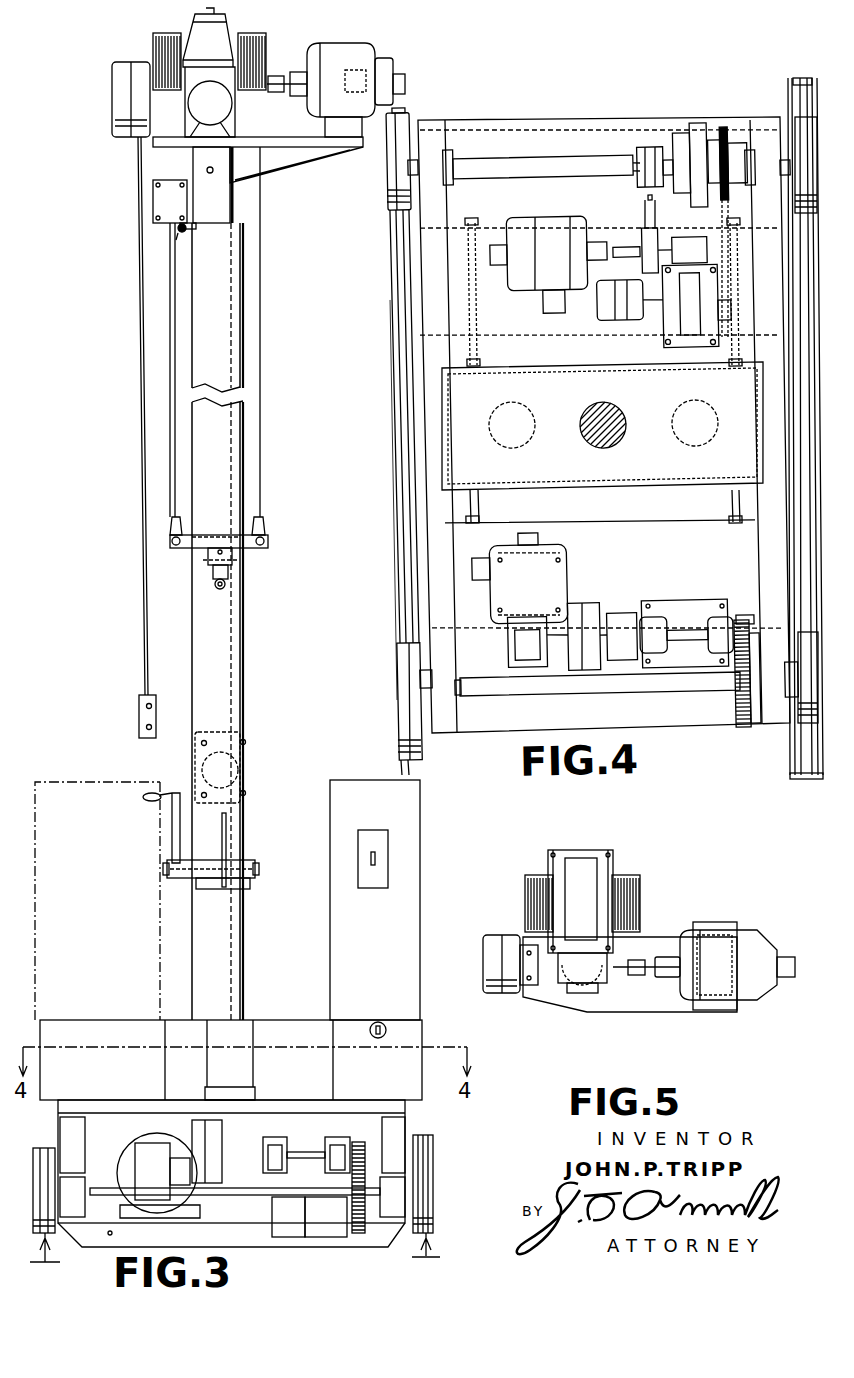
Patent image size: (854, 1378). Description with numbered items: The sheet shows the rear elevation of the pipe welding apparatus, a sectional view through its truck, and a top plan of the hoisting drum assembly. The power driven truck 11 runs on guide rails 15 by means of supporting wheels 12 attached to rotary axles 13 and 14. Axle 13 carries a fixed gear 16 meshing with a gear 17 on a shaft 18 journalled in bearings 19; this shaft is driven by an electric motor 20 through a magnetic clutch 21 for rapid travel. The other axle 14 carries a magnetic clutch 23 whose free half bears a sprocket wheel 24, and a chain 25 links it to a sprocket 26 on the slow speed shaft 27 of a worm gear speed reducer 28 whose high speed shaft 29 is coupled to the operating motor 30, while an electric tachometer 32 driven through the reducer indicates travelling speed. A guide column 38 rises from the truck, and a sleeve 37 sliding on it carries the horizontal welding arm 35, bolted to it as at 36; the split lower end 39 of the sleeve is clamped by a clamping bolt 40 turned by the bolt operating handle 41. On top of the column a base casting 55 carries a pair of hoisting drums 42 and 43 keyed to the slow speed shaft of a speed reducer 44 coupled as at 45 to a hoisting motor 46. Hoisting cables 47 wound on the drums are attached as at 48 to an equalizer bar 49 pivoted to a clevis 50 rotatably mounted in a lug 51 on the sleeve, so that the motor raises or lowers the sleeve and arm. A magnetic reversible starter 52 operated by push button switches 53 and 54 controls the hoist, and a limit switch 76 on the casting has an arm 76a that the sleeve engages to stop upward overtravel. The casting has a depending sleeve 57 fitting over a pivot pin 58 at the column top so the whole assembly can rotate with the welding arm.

In FIG. 3, the power driven truck 11 is at (418, 1128).
In FIG. 4, the power driven truck 11 is at (430, 425).
In FIG. 3, the supporting wheels 12 is at (44, 1150).
In FIG. 4, the supporting wheels 12 is at (402, 168).
In FIG. 3, the axle 13 is at (245, 1197).
In FIG. 4, the axle 13 is at (524, 686).
In FIG. 4, the axle 14 is at (520, 157).
In FIG. 3, the guide rails 15 is at (50, 1250).
In FIG. 4, the guide rails 15 is at (398, 526).
In FIG. 3, the gear 16 is at (358, 1232).
In FIG. 4, the gear 16 is at (729, 705).
In FIG. 4, the gear 17 is at (745, 618).
In FIG. 3, the shaft 18 is at (305, 1154).
In FIG. 4, the shaft 18 is at (683, 632).
In FIG. 3, the bearings 19 is at (275, 1140).
In FIG. 4, the bearings 19 is at (646, 618).
In FIG. 3, the electric motor 20 is at (128, 1165).
In FIG. 4, the electric motor 20 is at (559, 575).
In FIG. 3, the magnetic clutch 21 is at (210, 1125).
In FIG. 4, the magnetic clutch 21 is at (590, 608).
In FIG. 4, the magnetic clutch 23 is at (703, 125).
In FIG. 4, the sprocket wheel 24 is at (728, 138).
In FIG. 4, the chain 25 is at (718, 257).
In FIG. 4, the sprocket 26 is at (737, 316).
In FIG. 4, the slow speed shaft 27 is at (738, 297).
In FIG. 4, the worm gear speed reducer 28 is at (690, 314).
In FIG. 4, the high speed shaft 29 is at (656, 237).
In FIG. 4, the operating motor 30 is at (564, 221).
In FIG. 4, the electric tachometer 32 is at (622, 322).
In FIG. 3, the welding arm 35 is at (232, 736).
In FIG. 3, the bolts 36 is at (203, 793).
In FIG. 3, the sleeve 37 is at (230, 672).
In FIG. 3, the guide column 38 is at (218, 490).
In FIG. 3, the split 39 is at (226, 822).
In FIG. 3, the clamping bolt 40 is at (256, 868).
In FIG. 3, the bolt operating handle 41 is at (172, 832).
In FIG. 3, the hoisting drum 42 is at (153, 40).
In FIG. 5, the hoisting drum 42 is at (525, 897).
In FIG. 3, the hoisting drum 43 is at (268, 40).
In FIG. 5, the hoisting drum 43 is at (642, 897).
In FIG. 3, the speed reducer 44 is at (212, 35).
In FIG. 5, the speed reducer 44 is at (576, 975).
In FIG. 3, the coupling 45 is at (272, 92).
In FIG. 5, the coupling 45 is at (640, 977).
In FIG. 3, the hoisting motor 46 is at (350, 55).
In FIG. 5, the hoisting motor 46 is at (725, 957).
In FIG. 3, the hoisting cables 47 is at (168, 316).
In FIG. 3, the cable attachments 48 is at (170, 523).
In FIG. 3, the equalizer bar 49 is at (250, 546).
In FIG. 3, the clevis 50 is at (205, 558).
In FIG. 3, the lug 51 is at (228, 580).
In FIG. 3, the magnetic reversible starter 52 is at (112, 98).
In FIG. 5, the magnetic reversible starter 52 is at (492, 977).
In FIG. 3, the push button switch 53 is at (146, 706).
In FIG. 3, the push button switch 54 is at (147, 727).
In FIG. 3, the base casting 55 is at (270, 142).
In FIG. 5, the base casting 55 is at (592, 1002).
In FIG. 3, the depending sleeve 57 is at (222, 210).
In FIG. 3, the pivot pin 58 is at (205, 233).
In FIG. 3, the limit switch 76 is at (153, 198).
In FIG. 3, the switch arm 76a is at (178, 230).